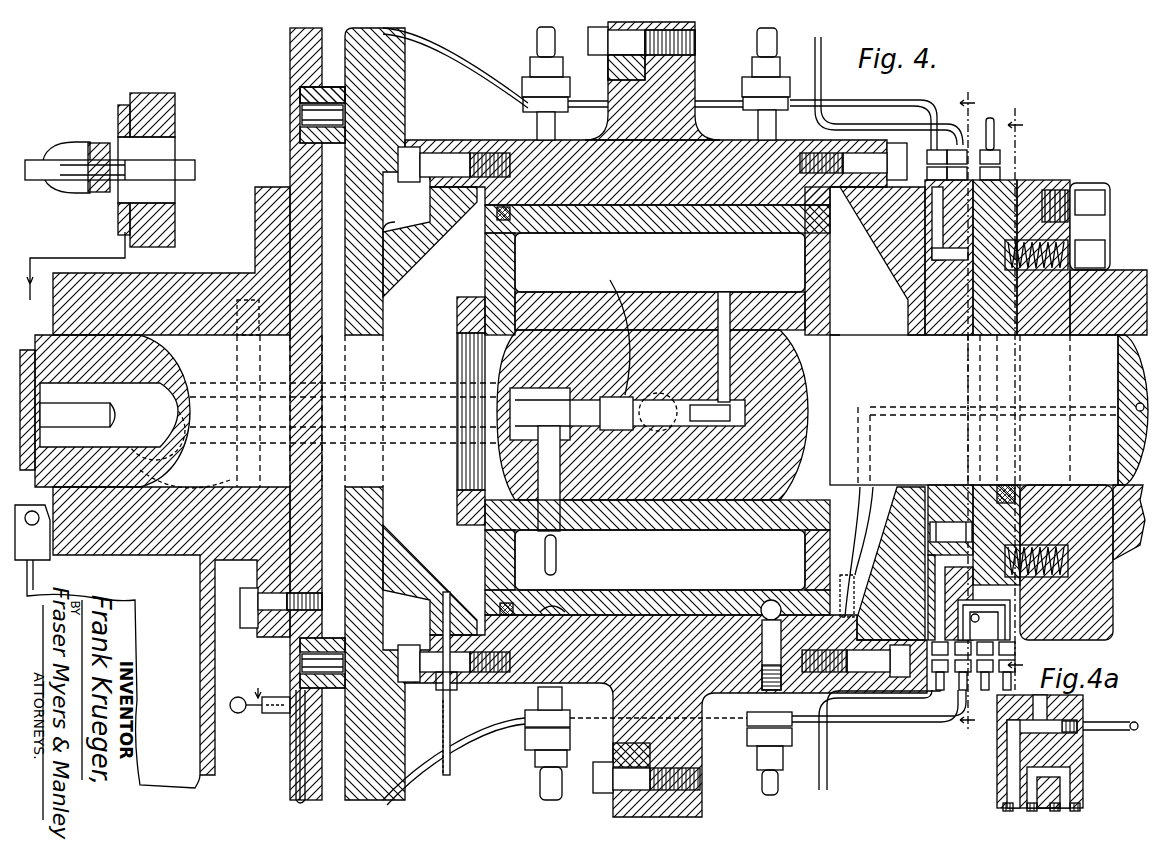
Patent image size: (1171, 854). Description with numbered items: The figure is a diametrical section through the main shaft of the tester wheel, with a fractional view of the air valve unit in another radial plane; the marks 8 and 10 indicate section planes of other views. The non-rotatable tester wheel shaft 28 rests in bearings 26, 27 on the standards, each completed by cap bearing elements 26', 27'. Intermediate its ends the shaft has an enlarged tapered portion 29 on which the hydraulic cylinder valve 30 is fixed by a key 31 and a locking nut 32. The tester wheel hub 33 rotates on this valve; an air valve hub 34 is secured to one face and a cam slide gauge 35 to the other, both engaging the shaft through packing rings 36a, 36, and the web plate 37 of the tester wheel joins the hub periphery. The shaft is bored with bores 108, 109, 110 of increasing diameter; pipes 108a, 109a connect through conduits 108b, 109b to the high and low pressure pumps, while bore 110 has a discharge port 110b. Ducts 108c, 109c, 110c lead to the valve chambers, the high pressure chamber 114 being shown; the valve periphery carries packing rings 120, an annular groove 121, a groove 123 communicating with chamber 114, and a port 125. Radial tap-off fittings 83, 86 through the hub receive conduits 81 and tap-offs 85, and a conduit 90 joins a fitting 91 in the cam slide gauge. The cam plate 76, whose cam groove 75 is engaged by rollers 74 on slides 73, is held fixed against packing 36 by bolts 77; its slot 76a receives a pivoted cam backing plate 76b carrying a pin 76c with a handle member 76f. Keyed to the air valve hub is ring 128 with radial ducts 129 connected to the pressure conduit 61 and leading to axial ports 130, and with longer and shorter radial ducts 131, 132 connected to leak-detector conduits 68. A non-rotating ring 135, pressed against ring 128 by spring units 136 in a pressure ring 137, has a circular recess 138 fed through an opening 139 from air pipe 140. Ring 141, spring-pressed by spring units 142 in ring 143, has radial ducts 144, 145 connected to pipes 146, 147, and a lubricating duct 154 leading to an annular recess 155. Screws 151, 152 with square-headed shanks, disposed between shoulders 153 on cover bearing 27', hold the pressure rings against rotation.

In FIG. 4, the section line 8 is at (967, 403).
In FIG. 4, the section line 10 is at (1022, 388).
In FIG. 4, the bearing 26 is at (152, 637).
In FIG. 4, the cap bearing element 26' is at (158, 261).
In FIG. 4, the bearing 27 is at (1116, 510).
In FIG. 4, the cap bearing element 27' is at (1109, 377).
In FIG. 4, the tester wheel shaft 28 is at (974, 410).
In FIG. 4, the enlarged tapered portion 29 is at (800, 330).
In FIG. 4, the hydraulic cylinder valve 30 is at (870, 250).
In FIG. 4, the key 31 is at (835, 335).
In FIG. 4, the locking nut 32 is at (462, 310).
In FIG. 4, the tester wheel hub 33 is at (733, 150).
In FIG. 4, the air valve hub 34 is at (855, 215).
In FIG. 4, the cam slide gauge 35 is at (425, 240).
In FIG. 4, the packing ring 36 is at (500, 225).
In FIG. 4, the packing ring 36a is at (1010, 485).
In FIG. 4, the web plate 37 is at (620, 68).
In FIG. 4, the pressure conduit 61 is at (826, 770).
In FIG. 4, the leak-detector conduits 68 is at (870, 722).
In FIG. 4, the slides 73 is at (345, 160).
In FIG. 4, the rollers 74 is at (300, 128).
In FIG. 4, the cam groove 75 is at (305, 92).
In FIG. 4, the cam plate 76 is at (292, 58).
In FIG. 4, the peripheral slot 76a is at (296, 800).
In FIG. 4, the cam backing plate 76b is at (296, 752).
In FIG. 4, the pin 76c is at (248, 712).
In FIG. 4, the handle member 76f is at (253, 686).
In FIG. 4, the bolts 77 is at (245, 318).
In FIG. 4, the conduits 81 is at (545, 785).
In FIG. 4, the tap-off fitting 83 is at (540, 700).
In FIG. 4, the tap-offs 85 is at (765, 785).
In FIG. 4, the fittings 86 is at (757, 702).
In FIG. 4, the conduit 90 is at (443, 725).
In FIG. 4, the fitting 91 is at (443, 695).
In FIG. 4, the bore 108 is at (715, 430).
In FIG. 4, the pipe 108a is at (690, 430).
In FIG. 4, the conduit 108b is at (45, 185).
In FIG. 4, the duct 108c is at (720, 350).
In FIG. 4, the bore 109 is at (605, 440).
In FIG. 4, the pipe 109a is at (172, 158).
In FIG. 4, the pipe 109b is at (80, 165).
In FIG. 4, the duct 109c is at (604, 329).
In FIG. 4, the bore 110 is at (500, 455).
In FIG. 4, the discharge port 110b is at (189, 444).
In FIG. 4, the duct 110c is at (530, 445).
In FIG. 4, the high pressure chamber 114 is at (660, 262).
In FIG. 4, the packing rings 120 is at (838, 560).
In FIG. 4, the annular groove 121 is at (765, 600).
In FIG. 4, the annular groove 123 is at (560, 605).
In FIG. 4, the port 125 is at (545, 568).
In FIG. 4, the ring 128 is at (905, 330).
In FIG. 4, the radial ducts 129 is at (885, 640).
In FIG. 4, the axial port 130 is at (952, 520).
In FIG. 4, the radial ducts 131 is at (925, 650).
In FIG. 4, the radial ducts 132 is at (935, 192).
In FIG. 4, the ring 135 is at (940, 245).
In FIG. 4A, the ring 135 is at (1083, 705).
In FIG. 4, the spring units 136 is at (1068, 250).
In FIG. 4, the pressure ring 137 is at (1045, 333).
In FIG. 4, the circular groove 138 is at (940, 330).
In FIG. 4A, the circular groove 138 is at (1040, 735).
In FIG. 4A, the opening 139 is at (1045, 732).
In FIG. 4A, the pipe 140 is at (1135, 732).
In FIG. 4, the ring 141 is at (1000, 200).
In FIG. 4, the spring units 142 is at (1020, 625).
In FIG. 4, the ring 143 is at (1040, 200).
In FIG. 4, the radial duct 144 is at (1060, 580).
In FIG. 4, the radial duct 145 is at (1050, 600).
In FIG. 4, the pipe 146 is at (965, 700).
In FIG. 4, the pipe 147 is at (1005, 700).
In FIG. 4, the screw 151 is at (1105, 255).
In FIG. 4, the screw 152 is at (1085, 192).
In FIG. 4, the upstanding shoulders 153 is at (1100, 225).
In FIG. 4, the lubricating duct 154 is at (975, 185).
In FIG. 4, the annular recess 155 is at (975, 170).